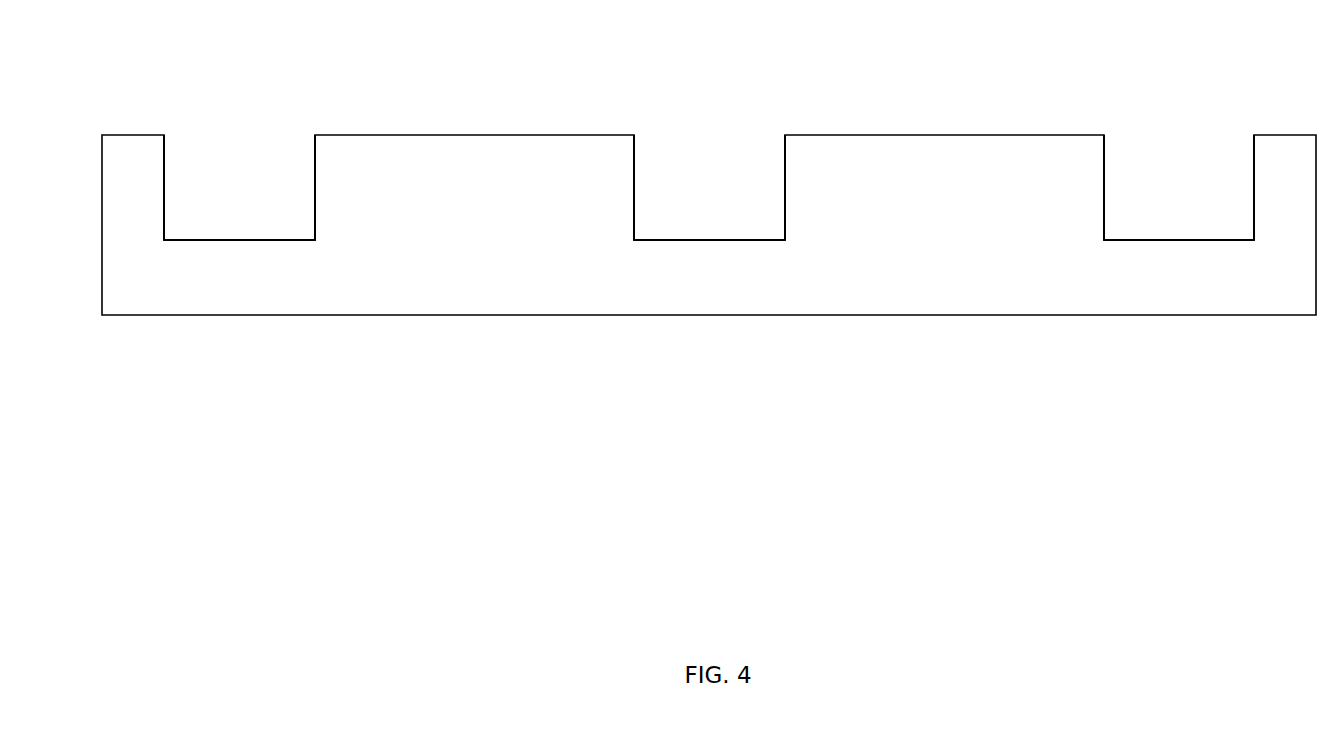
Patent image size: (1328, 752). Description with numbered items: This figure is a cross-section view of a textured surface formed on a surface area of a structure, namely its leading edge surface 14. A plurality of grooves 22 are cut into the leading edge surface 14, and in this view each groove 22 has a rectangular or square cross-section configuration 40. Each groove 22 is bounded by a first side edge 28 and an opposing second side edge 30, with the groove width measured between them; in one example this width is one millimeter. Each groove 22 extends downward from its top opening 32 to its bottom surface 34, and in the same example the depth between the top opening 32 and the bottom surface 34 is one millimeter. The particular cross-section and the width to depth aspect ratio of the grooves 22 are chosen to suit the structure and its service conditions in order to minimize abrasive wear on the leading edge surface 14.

The leading edge surface 14 is at (124, 135).
The groove 22 is at (236, 112).
The first side edge 28 is at (315, 135).
The second side edge 30 is at (164, 135).
The top opening 32 is at (248, 132).
The bottom surface 34 is at (221, 240).
The rectangular or square cross-section configuration 40 is at (254, 189).